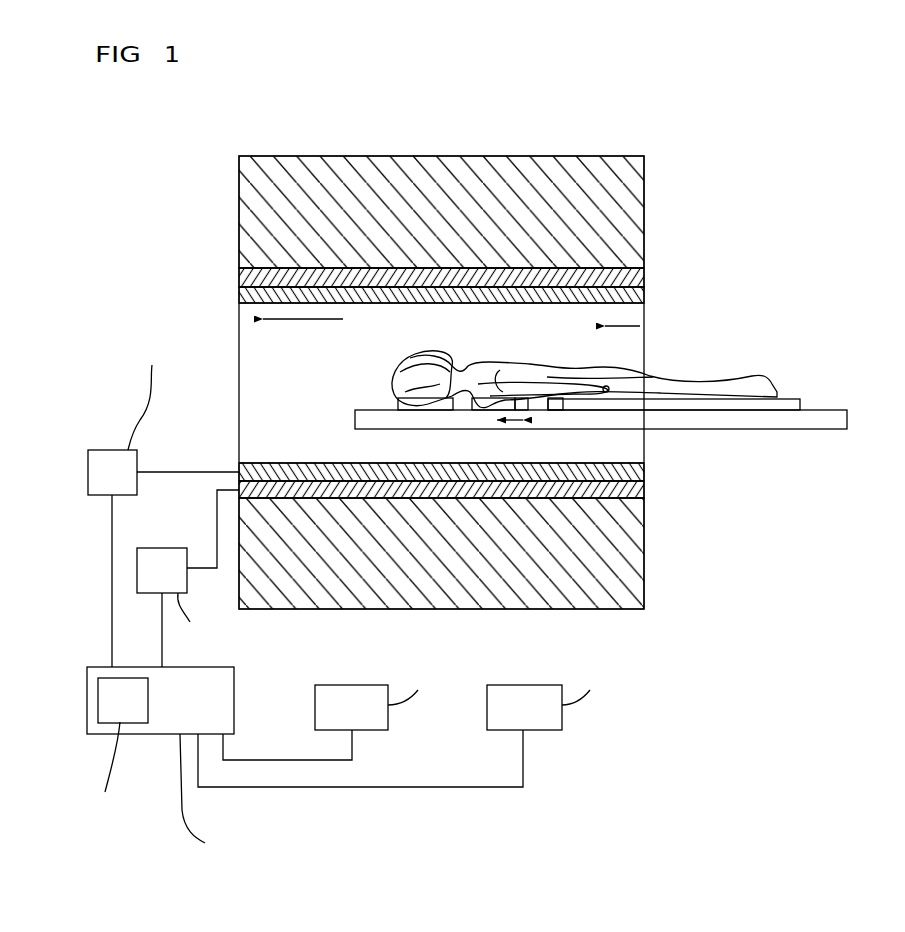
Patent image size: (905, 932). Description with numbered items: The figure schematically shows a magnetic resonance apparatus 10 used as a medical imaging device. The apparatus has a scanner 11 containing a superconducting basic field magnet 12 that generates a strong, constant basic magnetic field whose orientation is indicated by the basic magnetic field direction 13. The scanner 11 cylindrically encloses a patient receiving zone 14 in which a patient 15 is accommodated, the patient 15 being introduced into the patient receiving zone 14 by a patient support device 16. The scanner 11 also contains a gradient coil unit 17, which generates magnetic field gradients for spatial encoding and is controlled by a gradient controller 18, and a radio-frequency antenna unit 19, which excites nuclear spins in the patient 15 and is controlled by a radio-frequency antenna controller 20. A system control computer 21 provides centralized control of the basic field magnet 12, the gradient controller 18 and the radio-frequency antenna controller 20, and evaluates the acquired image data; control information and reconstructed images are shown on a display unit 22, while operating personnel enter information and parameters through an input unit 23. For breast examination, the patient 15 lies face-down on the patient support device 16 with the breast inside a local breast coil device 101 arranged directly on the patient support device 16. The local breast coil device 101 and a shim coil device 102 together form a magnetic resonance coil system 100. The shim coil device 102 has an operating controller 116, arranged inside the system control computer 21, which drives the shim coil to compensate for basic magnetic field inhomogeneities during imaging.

The magnetic resonance apparatus 10 is at (721, 135).
The scanner 11 is at (448, 151).
The superconducting basic field magnet 12 is at (623, 223).
The basic magnetic field direction 13 is at (309, 320).
The patient receiving zone 14 is at (640, 326).
The patient 15 is at (742, 380).
The patient support device 16 is at (837, 410).
The gradient coil unit 17 is at (643, 492).
The gradient controller 18 is at (162, 548).
The radio-frequency antenna unit 19 is at (643, 472).
The radio-frequency antenna controller 20 is at (110, 450).
The system control computer 21 is at (282, 781).
The display unit 22 is at (355, 685).
The input unit 23 is at (530, 685).
The magnetic resonance coil system 100 is at (560, 429).
The local breast coil device 101 is at (481, 410).
The shim coil device 102 is at (546, 410).
The operating controller 116 is at (148, 700).